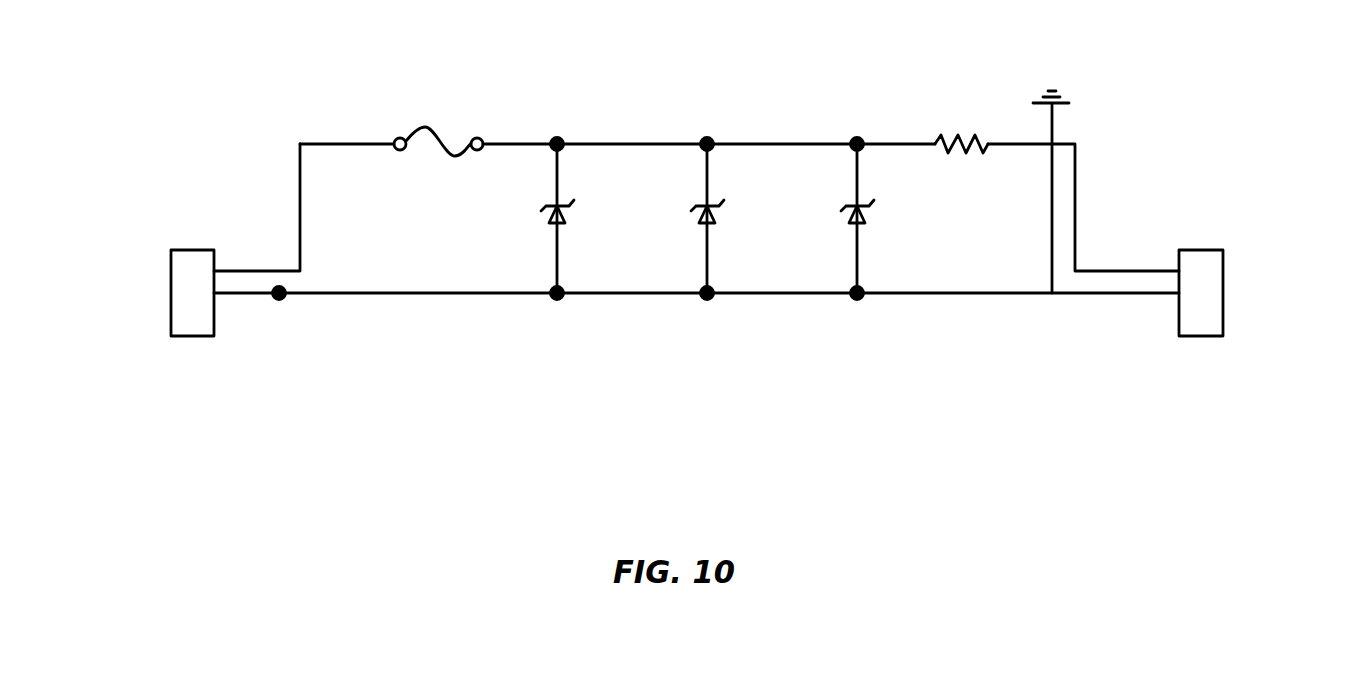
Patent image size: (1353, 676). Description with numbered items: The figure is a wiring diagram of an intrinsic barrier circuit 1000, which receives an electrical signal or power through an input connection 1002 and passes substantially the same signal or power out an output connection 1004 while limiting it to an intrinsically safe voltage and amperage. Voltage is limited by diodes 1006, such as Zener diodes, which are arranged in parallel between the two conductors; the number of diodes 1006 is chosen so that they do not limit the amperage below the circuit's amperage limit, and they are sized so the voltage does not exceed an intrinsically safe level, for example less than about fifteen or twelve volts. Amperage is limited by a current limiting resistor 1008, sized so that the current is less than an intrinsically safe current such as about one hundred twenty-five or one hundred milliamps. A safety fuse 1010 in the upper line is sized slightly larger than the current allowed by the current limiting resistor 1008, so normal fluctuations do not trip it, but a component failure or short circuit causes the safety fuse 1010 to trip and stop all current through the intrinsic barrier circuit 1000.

The intrinsic barrier circuit 1000 is at (383, 402).
The input connection 1002 is at (192, 302).
The output connection 1004 is at (1210, 295).
The diode 1006 is at (567, 221).
The current limiting resistor 1008 is at (956, 133).
The safety fuse 1010 is at (426, 127).